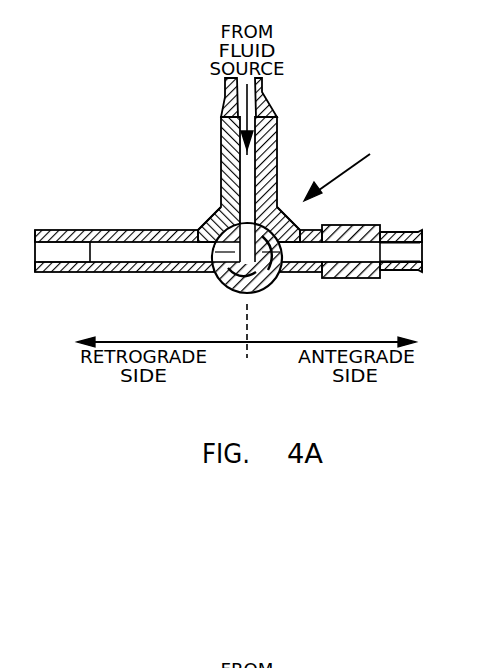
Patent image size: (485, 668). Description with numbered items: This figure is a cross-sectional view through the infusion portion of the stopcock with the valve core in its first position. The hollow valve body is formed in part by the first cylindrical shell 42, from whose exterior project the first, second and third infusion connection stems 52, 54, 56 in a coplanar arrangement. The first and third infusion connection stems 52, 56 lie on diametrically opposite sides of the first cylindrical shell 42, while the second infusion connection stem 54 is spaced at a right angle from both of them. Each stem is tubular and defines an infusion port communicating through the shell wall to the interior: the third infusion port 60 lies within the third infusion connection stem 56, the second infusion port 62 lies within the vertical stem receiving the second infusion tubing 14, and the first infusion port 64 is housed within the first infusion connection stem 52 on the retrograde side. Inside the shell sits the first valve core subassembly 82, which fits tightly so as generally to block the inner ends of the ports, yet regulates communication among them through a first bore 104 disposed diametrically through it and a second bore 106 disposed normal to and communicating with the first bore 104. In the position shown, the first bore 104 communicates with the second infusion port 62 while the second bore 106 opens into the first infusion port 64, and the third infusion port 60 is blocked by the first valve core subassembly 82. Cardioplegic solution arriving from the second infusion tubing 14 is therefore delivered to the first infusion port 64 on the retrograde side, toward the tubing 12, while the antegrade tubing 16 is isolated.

The retrograde catheter tubing 12 is at (57, 253).
The second infusion tubing 14 is at (262, 99).
The antegrade catheter tubing 16 is at (398, 260).
The first cylindrical shell 42 is at (349, 170).
The first infusion connection stem 52 is at (132, 231).
The second infusion connection stem 54 is at (233, 143).
The third infusion connection stem 56 is at (350, 223).
The third infusion port 60 is at (370, 230).
The second infusion port 62 is at (241, 186).
The first infusion port 64 is at (191, 231).
The first valve core subassembly 82 is at (240, 292).
The first bore 104 is at (274, 280).
The second bore 106 is at (224, 262).